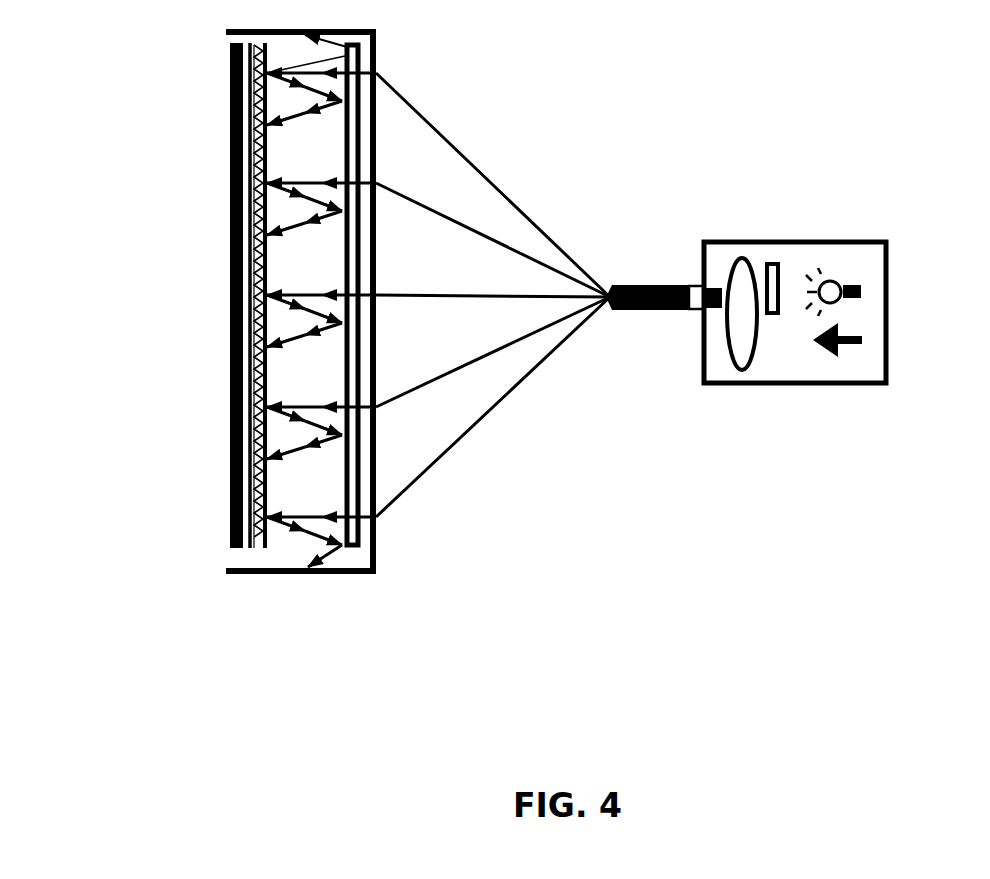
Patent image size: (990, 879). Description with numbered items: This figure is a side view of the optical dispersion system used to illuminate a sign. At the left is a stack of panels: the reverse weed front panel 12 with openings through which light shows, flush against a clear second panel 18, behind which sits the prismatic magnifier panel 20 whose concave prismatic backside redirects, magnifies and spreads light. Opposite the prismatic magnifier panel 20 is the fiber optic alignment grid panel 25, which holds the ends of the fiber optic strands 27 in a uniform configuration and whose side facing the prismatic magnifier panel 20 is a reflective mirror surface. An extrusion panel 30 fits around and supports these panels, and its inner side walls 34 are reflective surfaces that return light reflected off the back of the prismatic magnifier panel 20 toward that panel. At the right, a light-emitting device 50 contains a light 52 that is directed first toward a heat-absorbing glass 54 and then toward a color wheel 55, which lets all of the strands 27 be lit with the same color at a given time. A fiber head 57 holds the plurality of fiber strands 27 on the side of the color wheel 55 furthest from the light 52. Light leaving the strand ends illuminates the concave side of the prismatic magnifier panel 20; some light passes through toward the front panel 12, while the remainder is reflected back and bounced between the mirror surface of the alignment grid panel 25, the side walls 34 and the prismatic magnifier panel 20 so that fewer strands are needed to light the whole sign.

The front panel 12 is at (236, 541).
The second panel 18 is at (241, 548).
The prismatic magnifier panel 20 is at (258, 548).
The fiber optic alignment grid panel 25 is at (373, 548).
The extrusion panel 30 is at (375, 570).
The inner side walls 34 is at (343, 570).
The fiber optic strands 27 is at (641, 283).
The light-emitting device 50 is at (884, 242).
The light 52 is at (848, 300).
The heat-absorbing glass 54 is at (772, 313).
The color wheel 55 is at (750, 265).
The fiber head 57 is at (700, 310).